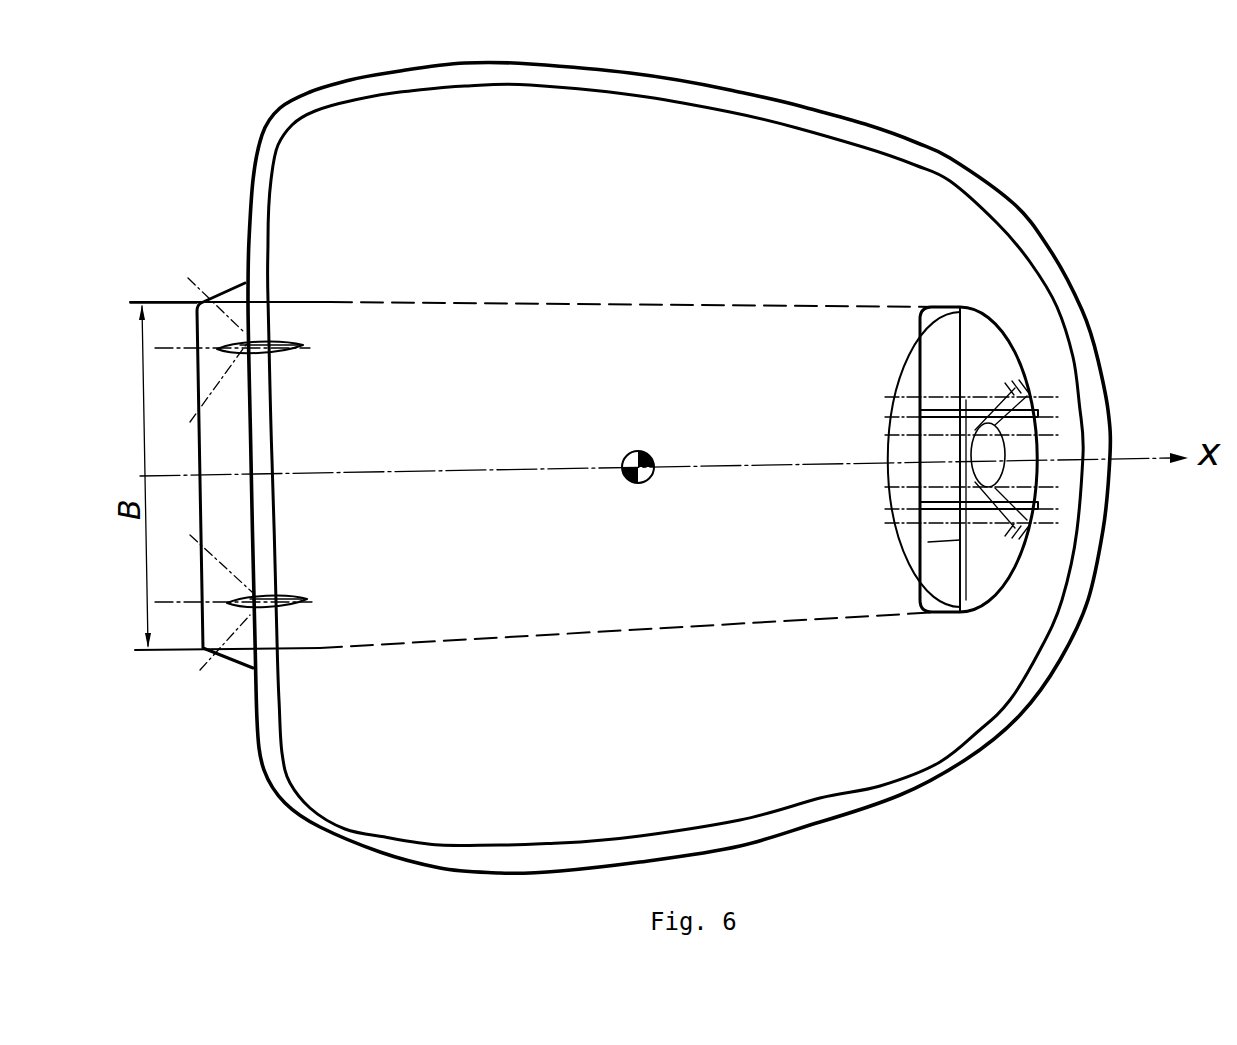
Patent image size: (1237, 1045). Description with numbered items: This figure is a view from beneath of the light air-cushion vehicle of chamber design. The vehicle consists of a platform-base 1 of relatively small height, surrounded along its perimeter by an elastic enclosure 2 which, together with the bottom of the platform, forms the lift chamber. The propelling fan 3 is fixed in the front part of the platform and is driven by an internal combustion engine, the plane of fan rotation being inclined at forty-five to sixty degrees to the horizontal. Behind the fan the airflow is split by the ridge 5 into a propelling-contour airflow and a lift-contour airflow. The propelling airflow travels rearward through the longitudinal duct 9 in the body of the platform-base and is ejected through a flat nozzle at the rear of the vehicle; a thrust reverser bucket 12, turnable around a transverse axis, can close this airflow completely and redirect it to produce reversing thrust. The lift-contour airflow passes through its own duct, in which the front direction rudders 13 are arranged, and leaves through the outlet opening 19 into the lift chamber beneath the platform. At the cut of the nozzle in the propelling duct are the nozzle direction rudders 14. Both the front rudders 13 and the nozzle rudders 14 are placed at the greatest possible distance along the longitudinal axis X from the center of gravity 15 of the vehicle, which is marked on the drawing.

The platform-base 1 is at (1055, 675).
The elastic enclosure 2 is at (982, 728).
The propelling fan 3 is at (990, 467).
The ridge 5 is at (962, 340).
The duct 9 is at (657, 622).
The thrust reverser bucket 12 is at (230, 307).
The direction rudders 13 is at (1060, 435).
The direction rudders 14 is at (235, 605).
The center of gravity 15 is at (628, 455).
The outlet opening 19 is at (928, 542).